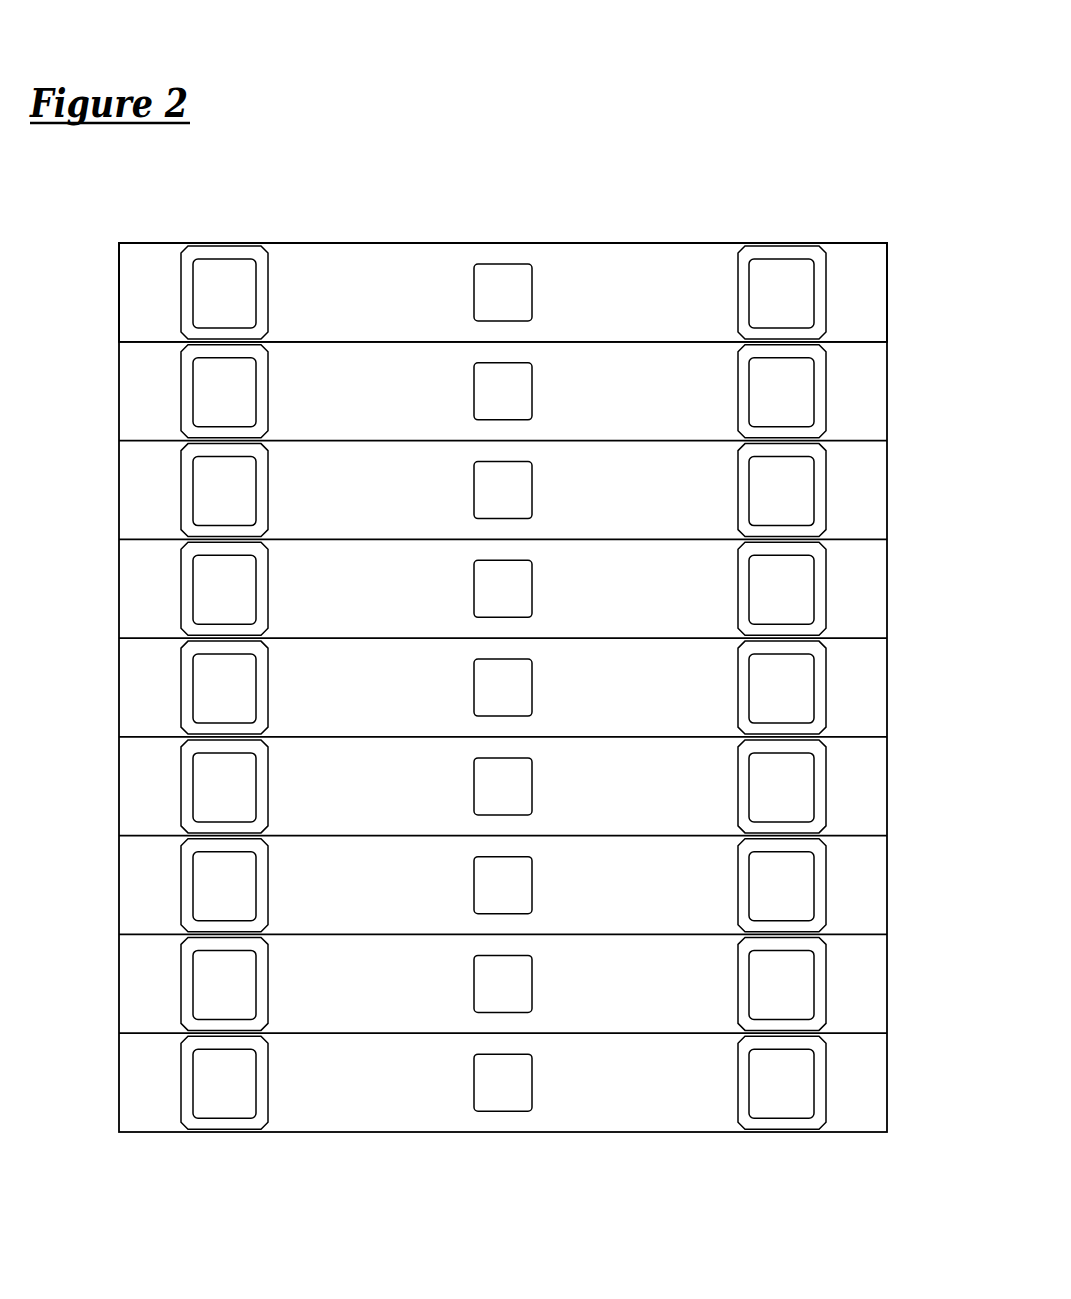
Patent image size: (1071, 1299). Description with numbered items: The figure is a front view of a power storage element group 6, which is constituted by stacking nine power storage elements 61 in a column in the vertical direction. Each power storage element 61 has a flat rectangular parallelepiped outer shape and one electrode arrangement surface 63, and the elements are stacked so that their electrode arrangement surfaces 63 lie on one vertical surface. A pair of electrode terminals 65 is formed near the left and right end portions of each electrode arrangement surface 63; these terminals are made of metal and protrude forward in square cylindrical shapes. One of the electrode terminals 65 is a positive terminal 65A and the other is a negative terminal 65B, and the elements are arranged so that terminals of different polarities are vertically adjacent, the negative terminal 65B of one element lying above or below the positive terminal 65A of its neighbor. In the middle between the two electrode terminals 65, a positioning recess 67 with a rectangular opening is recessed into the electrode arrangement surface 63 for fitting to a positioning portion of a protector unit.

The power storage element group 6 is at (671, 92).
The power storage element 61 is at (857, 307).
The electrode arrangement surface 63 is at (363, 283).
The electrode terminal 65 is at (452, 627).
The positive terminal 65A is at (773, 275).
The negative terminal 65B is at (222, 304).
The positioning recess 67 is at (532, 295).